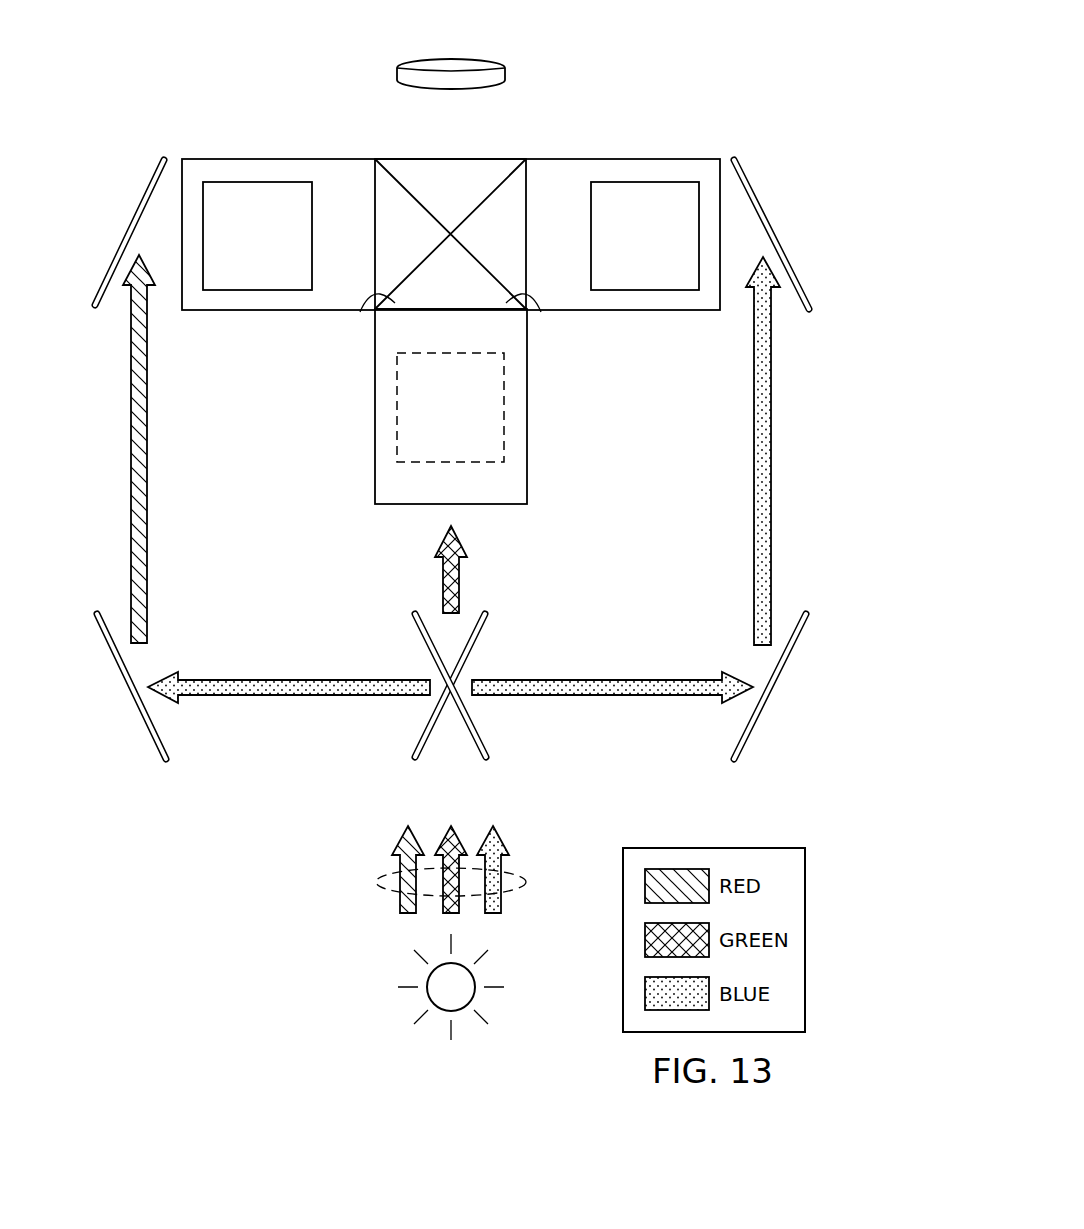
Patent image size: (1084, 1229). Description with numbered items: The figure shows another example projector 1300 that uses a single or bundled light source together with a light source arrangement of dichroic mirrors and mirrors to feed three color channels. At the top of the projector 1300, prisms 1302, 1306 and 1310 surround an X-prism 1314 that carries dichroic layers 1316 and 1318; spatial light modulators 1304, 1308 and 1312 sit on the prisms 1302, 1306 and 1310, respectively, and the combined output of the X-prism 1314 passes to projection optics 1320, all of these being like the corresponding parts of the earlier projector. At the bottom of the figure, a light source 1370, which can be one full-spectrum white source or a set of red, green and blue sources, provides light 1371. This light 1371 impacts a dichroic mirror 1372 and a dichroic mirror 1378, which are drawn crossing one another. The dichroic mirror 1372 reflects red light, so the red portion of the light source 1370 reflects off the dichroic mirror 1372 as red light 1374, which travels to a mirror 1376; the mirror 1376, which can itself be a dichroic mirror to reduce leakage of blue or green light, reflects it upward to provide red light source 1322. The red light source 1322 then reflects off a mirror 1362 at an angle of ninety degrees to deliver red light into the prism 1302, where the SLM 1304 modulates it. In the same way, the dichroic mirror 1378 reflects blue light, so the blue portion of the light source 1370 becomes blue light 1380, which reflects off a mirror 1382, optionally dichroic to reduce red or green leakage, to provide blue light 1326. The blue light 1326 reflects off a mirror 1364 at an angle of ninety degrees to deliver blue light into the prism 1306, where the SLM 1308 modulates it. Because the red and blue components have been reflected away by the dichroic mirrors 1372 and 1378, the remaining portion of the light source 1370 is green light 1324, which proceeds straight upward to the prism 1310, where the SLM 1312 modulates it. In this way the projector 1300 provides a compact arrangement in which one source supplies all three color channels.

The projector 1300 is at (696, 63).
The prism 1302 is at (277, 168).
The SLM 1304 is at (283, 250).
The prism 1306 is at (624, 168).
The SLM 1308 is at (669, 250).
The prism 1310 is at (378, 408).
The SLM 1312 is at (478, 422).
The X-prism 1314 is at (447, 168).
The dichroic layer 1316 is at (541, 312).
The dichroic layer 1318 is at (360, 312).
The projection optics 1320 is at (398, 72).
The red light source 1322 is at (129, 456).
The green light 1324 is at (441, 584).
The blue light 1326 is at (772, 456).
The mirror 1362 is at (128, 226).
The mirror 1364 is at (776, 230).
The light source 1370 is at (443, 1010).
The light 1371 is at (380, 880).
The dichroic mirror 1372 is at (490, 763).
The red light 1374 is at (300, 697).
The mirror 1376 is at (127, 692).
The dichroic mirror 1378 is at (412, 763).
The blue light 1380 is at (598, 697).
The mirror 1382 is at (777, 692).